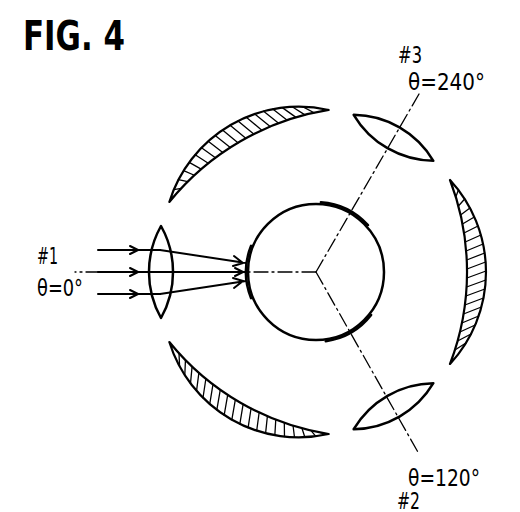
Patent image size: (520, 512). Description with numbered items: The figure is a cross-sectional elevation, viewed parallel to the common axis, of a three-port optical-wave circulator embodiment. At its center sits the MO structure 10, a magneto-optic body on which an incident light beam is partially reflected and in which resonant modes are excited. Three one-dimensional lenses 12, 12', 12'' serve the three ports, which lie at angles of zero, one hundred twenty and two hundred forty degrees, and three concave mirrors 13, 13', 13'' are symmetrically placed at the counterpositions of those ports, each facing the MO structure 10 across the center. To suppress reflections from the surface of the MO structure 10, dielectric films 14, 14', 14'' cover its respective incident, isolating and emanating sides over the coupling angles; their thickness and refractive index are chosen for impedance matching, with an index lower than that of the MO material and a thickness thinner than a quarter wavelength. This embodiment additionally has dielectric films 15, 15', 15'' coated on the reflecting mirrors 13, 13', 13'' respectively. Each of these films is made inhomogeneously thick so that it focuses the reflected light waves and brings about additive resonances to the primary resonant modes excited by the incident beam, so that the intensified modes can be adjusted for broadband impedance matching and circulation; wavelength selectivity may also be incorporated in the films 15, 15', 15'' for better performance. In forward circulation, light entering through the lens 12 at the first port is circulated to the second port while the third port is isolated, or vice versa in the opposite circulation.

The MO structure 10 is at (360, 288).
The one-dimensional lens 12 is at (172, 288).
The one-dimensional lens 12' is at (409, 411).
The one-dimensional lens 12'' is at (416, 137).
The concave mirror 13 is at (474, 262).
The concave mirror 13' is at (236, 140).
The concave mirror 13'' is at (231, 403).
The dielectric film 14 is at (186, 315).
The dielectric film 14' is at (350, 402).
The dielectric film 14'' is at (345, 143).
The dielectric film 15 is at (474, 265).
The dielectric film 15' is at (234, 143).
The dielectric film 15'' is at (245, 407).